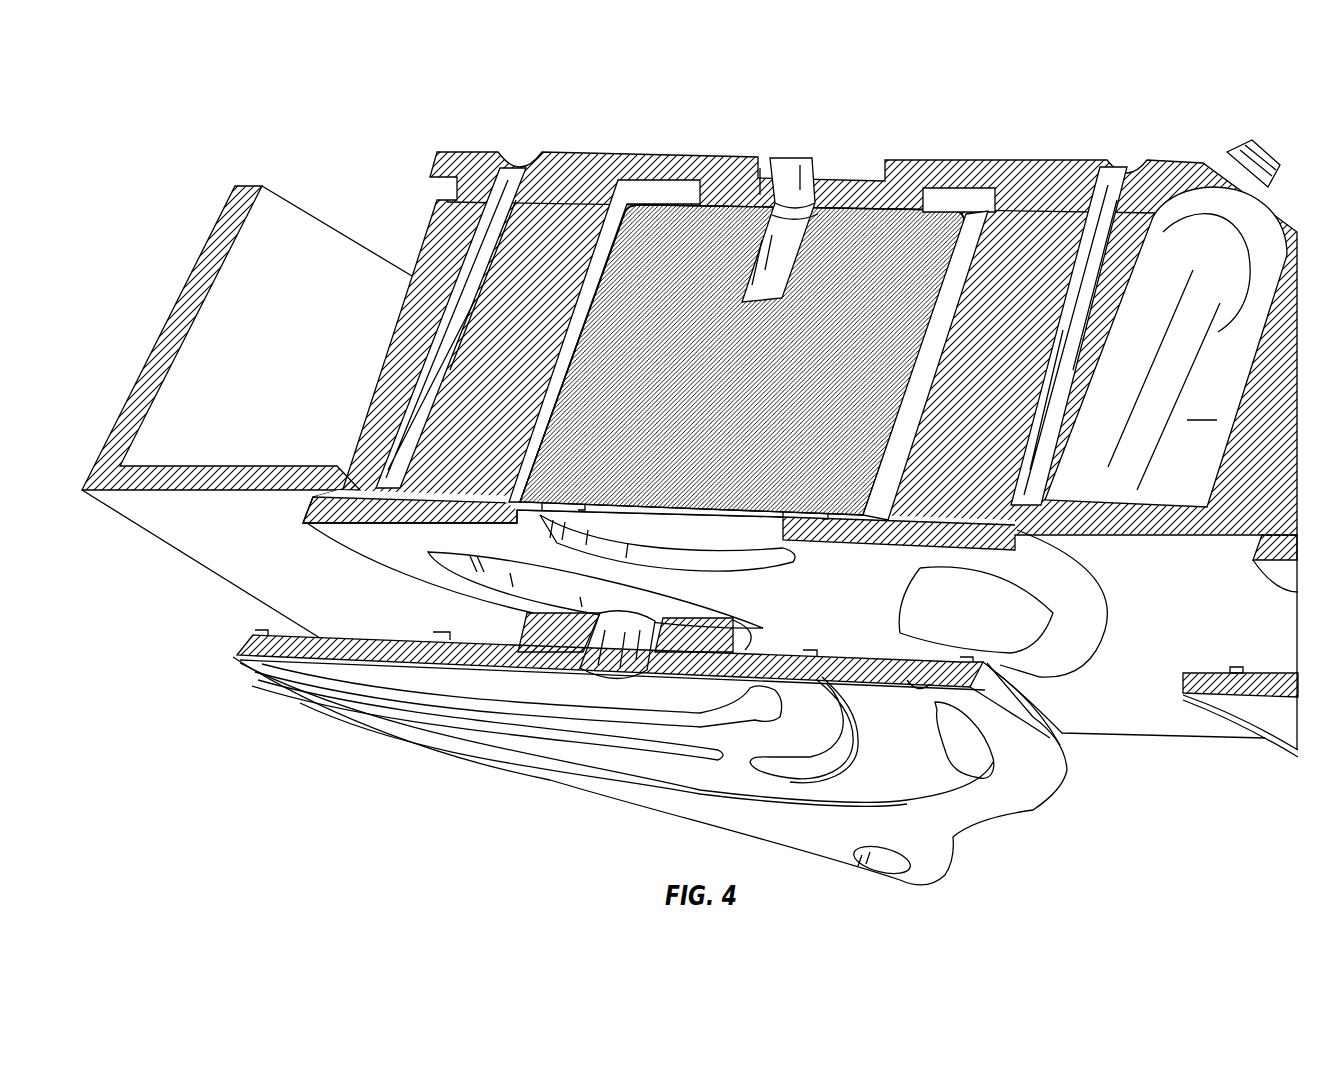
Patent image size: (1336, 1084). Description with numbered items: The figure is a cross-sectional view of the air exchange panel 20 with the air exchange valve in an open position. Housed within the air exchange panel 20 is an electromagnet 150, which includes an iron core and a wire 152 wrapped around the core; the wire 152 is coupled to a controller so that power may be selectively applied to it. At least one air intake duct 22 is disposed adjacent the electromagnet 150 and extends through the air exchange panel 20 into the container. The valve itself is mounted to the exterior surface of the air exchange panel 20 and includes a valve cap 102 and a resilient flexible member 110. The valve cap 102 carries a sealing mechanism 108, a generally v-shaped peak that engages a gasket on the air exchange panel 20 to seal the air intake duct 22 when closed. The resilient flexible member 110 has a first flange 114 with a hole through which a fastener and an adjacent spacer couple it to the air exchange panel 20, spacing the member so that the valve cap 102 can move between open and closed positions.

The air exchange panel 20 is at (220, 146).
The air intake duct 22 is at (480, 240).
The electromagnet 150 is at (672, 250).
The wire 152 is at (1237, 163).
The sealing mechanism 108 is at (540, 666).
The valve cap 102 is at (560, 676).
The resilient flexible member 110 is at (607, 780).
The first flange 114 is at (830, 832).